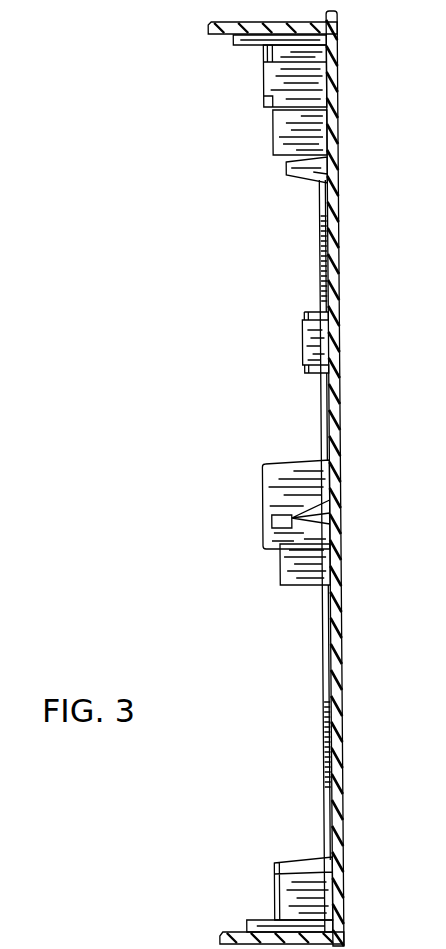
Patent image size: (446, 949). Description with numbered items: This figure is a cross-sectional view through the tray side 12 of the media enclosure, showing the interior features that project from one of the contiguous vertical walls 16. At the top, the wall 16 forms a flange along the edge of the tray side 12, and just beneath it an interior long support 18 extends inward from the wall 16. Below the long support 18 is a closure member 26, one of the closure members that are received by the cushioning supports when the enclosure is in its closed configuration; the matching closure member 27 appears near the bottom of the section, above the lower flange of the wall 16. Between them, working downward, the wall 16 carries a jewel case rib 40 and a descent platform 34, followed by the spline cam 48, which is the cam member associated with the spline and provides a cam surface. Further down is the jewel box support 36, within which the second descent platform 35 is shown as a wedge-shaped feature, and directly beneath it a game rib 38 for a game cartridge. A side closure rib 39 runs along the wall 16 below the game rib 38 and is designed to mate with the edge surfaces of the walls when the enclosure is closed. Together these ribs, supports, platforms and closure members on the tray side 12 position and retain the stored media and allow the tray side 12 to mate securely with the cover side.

The tray side 12 is at (337, 213).
The vertical walls 16 is at (250, 22).
The long supports 18 is at (240, 45).
The closure member 26 is at (265, 82).
The jewel case rib 40 is at (271, 122).
The descent platform 34 is at (286, 167).
The spline cam 48 is at (302, 333).
The jewel box support 36 is at (262, 509).
The descent platform 35 is at (326, 500).
The game rib 38 is at (280, 568).
The side closure rib 39 is at (318, 733).
The closure member 27 is at (272, 890).